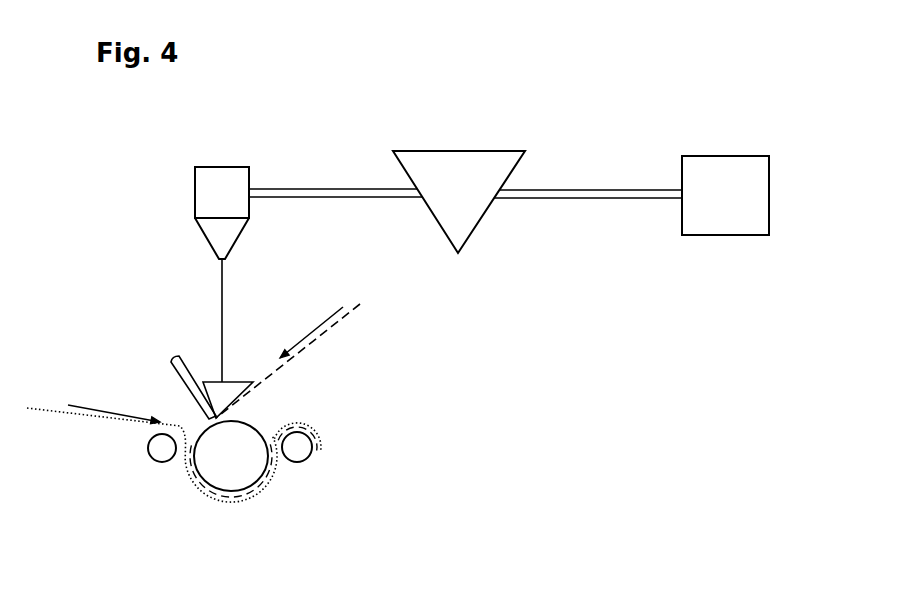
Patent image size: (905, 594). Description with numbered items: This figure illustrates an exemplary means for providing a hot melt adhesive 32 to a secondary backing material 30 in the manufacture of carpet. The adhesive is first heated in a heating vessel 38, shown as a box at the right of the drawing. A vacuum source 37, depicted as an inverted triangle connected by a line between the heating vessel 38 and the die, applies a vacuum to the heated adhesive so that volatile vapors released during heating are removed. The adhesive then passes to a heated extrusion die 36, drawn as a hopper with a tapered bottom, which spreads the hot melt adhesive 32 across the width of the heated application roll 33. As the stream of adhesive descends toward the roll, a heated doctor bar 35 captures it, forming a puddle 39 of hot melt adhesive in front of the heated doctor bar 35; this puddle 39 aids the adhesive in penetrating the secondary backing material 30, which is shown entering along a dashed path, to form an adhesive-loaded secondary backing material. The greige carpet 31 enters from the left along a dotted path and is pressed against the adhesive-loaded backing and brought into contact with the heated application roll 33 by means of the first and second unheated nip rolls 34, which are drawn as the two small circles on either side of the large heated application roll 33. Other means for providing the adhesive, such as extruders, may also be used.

The secondary backing material 30 is at (303, 358).
The greige carpet 31 is at (118, 432).
The hot melt adhesive 32 is at (231, 320).
The heated application roll 33 is at (256, 418).
The unheated nip rolls 34 is at (163, 469).
The heated doctor bar 35 is at (180, 388).
The heated extrusion die 36 is at (220, 154).
The vacuum source 37 is at (447, 147).
The heating vessel 38 is at (693, 148).
The puddle 39 is at (208, 373).